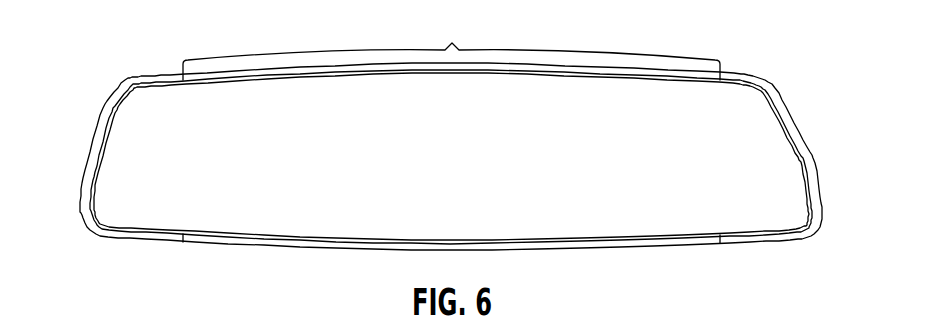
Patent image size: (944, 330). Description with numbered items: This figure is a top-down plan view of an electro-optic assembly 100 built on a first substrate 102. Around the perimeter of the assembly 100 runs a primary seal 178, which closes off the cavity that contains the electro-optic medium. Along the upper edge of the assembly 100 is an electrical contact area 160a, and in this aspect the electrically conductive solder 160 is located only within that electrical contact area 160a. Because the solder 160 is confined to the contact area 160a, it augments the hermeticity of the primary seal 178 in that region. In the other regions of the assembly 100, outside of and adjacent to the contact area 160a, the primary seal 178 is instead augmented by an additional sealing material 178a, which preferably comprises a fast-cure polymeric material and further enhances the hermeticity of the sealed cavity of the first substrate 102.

The electro-optic assembly 100 is at (461, 142).
The first substrate 102 is at (472, 164).
The electrically conductive solder 160 is at (720, 72).
The electrical contact area 160a is at (451, 46).
The primary seal 178 is at (793, 127).
The additional sealing material 178a is at (820, 158).